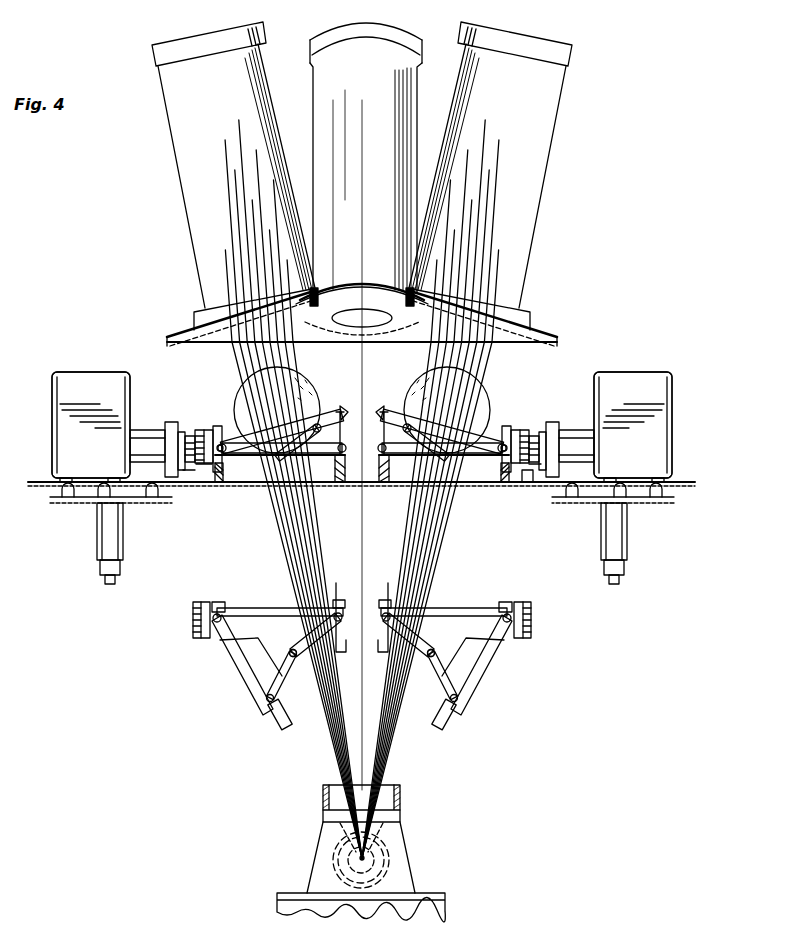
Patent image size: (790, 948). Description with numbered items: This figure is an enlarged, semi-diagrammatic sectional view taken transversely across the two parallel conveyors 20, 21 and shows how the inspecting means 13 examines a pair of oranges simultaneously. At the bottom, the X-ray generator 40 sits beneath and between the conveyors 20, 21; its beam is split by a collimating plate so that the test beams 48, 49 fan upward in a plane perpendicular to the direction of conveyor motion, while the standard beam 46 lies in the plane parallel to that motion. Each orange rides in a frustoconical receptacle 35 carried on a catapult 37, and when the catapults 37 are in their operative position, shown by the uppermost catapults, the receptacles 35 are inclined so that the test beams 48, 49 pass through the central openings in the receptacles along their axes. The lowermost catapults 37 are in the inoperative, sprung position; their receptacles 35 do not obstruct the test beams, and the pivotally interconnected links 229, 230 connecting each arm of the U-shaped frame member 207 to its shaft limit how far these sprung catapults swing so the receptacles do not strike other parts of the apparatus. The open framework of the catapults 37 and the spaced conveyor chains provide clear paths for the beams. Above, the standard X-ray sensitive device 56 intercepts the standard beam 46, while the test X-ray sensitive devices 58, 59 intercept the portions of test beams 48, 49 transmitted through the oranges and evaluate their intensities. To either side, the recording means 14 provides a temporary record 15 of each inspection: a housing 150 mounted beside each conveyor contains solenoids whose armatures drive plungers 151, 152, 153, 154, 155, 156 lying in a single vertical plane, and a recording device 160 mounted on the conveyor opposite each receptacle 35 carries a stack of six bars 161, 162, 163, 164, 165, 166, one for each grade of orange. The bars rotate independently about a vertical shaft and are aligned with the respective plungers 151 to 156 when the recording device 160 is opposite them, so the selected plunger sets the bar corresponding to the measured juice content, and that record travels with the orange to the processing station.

The inspecting means 13 is at (566, 126).
The recording means 14 is at (80, 395).
The temporary record 15 is at (200, 418).
The conveyor 20 is at (218, 598).
The conveyor 21 is at (502, 588).
The receptacle 35 is at (322, 410).
The catapult 37 is at (252, 463).
The X-ray generator 40 is at (408, 837).
The X-ray beam 46 is at (334, 764).
The test beam 48 is at (303, 557).
The test beam 49 is at (423, 548).
The standard X-ray sensitive device 56 is at (408, 95).
The test X-ray sensitive device 58 is at (176, 134).
The test X-ray sensitive device 59 is at (564, 91).
The housing 150 is at (108, 373).
The plunger 151 is at (538, 470).
The plunger 152 is at (542, 466).
The plunger 153 is at (549, 468).
The plunger 154 is at (541, 445).
The plunger 155 is at (537, 440).
The plunger 156 is at (535, 435).
The recording device 160 is at (208, 427).
The bar 161 is at (183, 486).
The bar 162 is at (193, 470).
The bar 163 is at (203, 466).
The bar 164 is at (172, 425).
The bar 165 is at (186, 432).
The bar 166 is at (190, 436).
The U-shaped frame member 207 is at (226, 650).
The link 229 is at (277, 722).
The link 230 is at (291, 650).